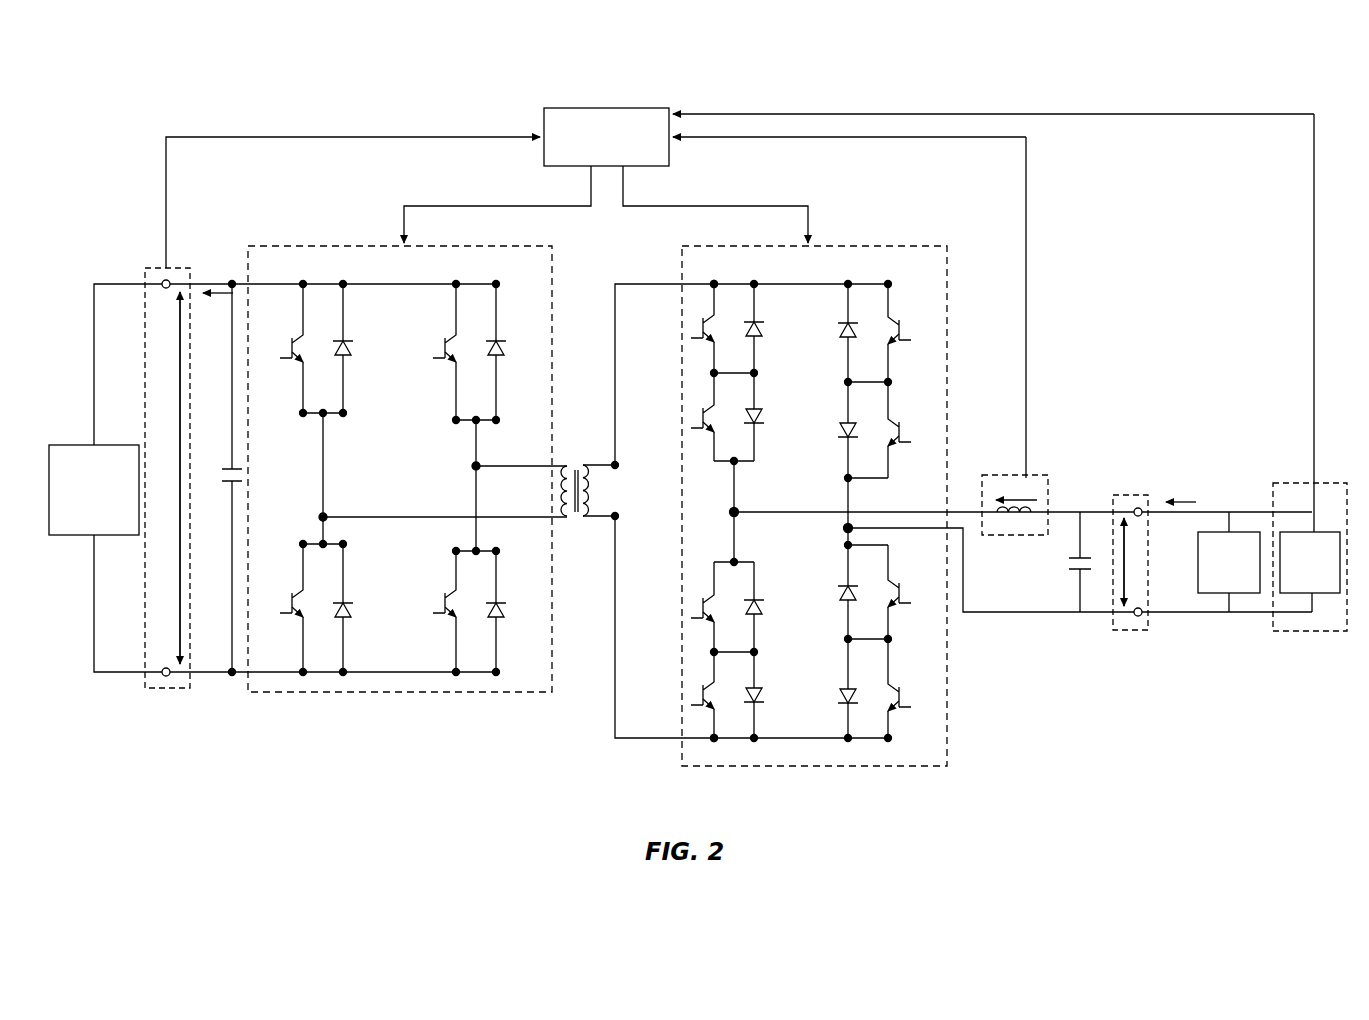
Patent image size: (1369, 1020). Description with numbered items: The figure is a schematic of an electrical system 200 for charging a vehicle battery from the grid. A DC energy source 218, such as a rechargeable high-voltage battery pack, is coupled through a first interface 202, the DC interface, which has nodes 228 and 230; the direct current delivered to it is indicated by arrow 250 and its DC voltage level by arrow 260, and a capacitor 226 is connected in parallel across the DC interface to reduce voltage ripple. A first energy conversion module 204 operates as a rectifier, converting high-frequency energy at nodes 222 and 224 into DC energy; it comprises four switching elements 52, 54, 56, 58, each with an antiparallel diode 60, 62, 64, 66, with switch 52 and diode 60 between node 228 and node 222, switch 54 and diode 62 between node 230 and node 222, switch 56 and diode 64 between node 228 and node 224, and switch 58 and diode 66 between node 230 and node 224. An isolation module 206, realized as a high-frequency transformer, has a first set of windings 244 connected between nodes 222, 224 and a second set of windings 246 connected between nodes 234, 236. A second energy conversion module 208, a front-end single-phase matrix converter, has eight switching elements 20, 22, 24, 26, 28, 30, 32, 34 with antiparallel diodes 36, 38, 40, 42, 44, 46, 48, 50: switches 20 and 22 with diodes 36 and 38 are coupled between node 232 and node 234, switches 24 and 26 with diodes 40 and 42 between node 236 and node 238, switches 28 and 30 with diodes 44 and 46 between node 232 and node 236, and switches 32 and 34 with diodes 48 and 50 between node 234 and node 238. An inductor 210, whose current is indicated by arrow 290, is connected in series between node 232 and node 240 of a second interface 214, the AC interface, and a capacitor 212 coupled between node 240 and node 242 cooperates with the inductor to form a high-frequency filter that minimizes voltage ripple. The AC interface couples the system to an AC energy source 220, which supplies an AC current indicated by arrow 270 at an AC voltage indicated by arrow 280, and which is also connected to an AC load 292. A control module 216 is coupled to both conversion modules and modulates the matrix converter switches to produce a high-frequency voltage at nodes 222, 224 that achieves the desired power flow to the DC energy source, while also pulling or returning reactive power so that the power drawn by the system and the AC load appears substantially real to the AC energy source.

The electrical system 200 is at (178, 76).
The control module 216 is at (640, 108).
The DC energy source 218 is at (94, 445).
The first interface 202 is at (160, 690).
The node 228 is at (168, 280).
The node 230 is at (168, 678).
The arrow 250 is at (218, 290).
The arrow 260 is at (182, 555).
The capacitor 226 is at (242, 481).
The first energy conversion module 204 is at (432, 692).
The switching element 52 is at (285, 348).
The switching element 54 is at (285, 608).
The switching element 56 is at (438, 352).
The switching element 58 is at (438, 611).
The diode 60 is at (355, 348).
The diode 62 is at (355, 608).
The diode 64 is at (508, 352).
The diode 66 is at (508, 611).
The node 222 is at (326, 516).
The node 224 is at (476, 466).
The isolation module 206 is at (577, 530).
The first set of windings 244 is at (565, 508).
The second set of windings 246 is at (587, 508).
The second energy conversion module 208 is at (878, 768).
The switching element 20 is at (702, 328).
The switching element 22 is at (702, 417).
The switching element 24 is at (907, 592).
The switching element 26 is at (907, 688).
The switching element 28 is at (702, 695).
The switching element 30 is at (702, 607).
The switching element 32 is at (907, 430).
The switching element 34 is at (907, 333).
The diode 36 is at (767, 328).
The diode 38 is at (767, 417).
The diode 40 is at (840, 592).
The diode 42 is at (840, 688).
The diode 44 is at (767, 695).
The diode 46 is at (767, 607).
The diode 48 is at (840, 430).
The diode 50 is at (840, 333).
The node 234 is at (716, 284).
The node 236 is at (714, 741).
The node 232 is at (740, 512).
The node 238 is at (846, 530).
The arrow 290 is at (1022, 500).
The inductive element 210 is at (1018, 520).
The capacitive element 212 is at (1060, 564).
The second interface 214 is at (1128, 634).
The node 240 is at (1141, 509).
The node 242 is at (1145, 614).
The arrow 280 is at (1118, 594).
The arrow 270 is at (1196, 500).
The AC energy source 220 is at (1250, 532).
The AC load 292 is at (1322, 594).